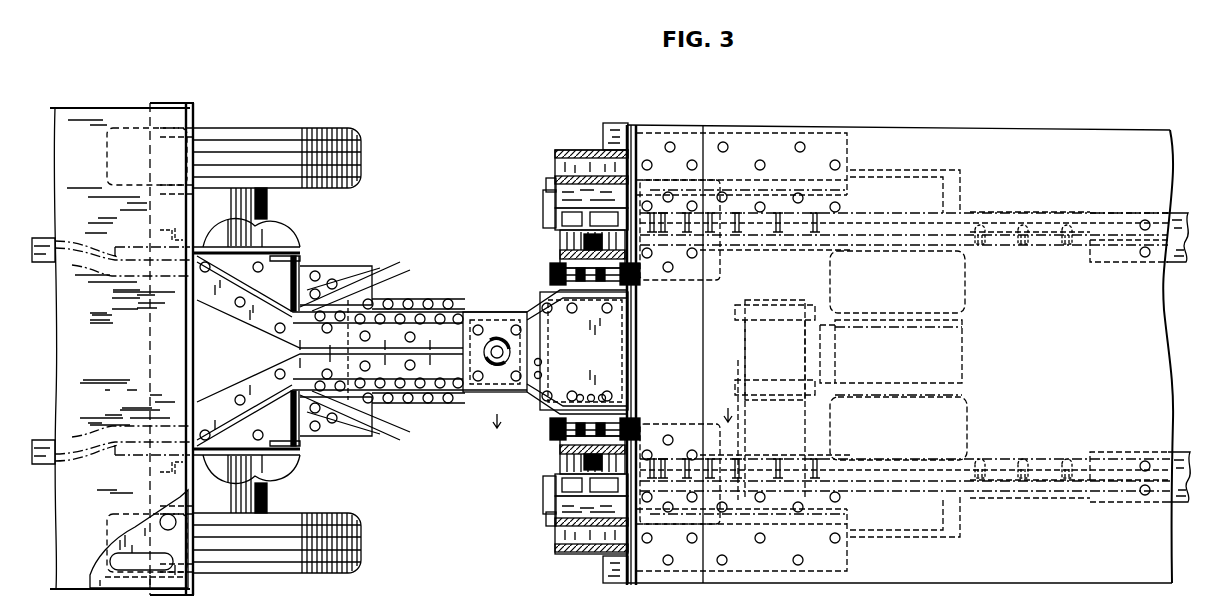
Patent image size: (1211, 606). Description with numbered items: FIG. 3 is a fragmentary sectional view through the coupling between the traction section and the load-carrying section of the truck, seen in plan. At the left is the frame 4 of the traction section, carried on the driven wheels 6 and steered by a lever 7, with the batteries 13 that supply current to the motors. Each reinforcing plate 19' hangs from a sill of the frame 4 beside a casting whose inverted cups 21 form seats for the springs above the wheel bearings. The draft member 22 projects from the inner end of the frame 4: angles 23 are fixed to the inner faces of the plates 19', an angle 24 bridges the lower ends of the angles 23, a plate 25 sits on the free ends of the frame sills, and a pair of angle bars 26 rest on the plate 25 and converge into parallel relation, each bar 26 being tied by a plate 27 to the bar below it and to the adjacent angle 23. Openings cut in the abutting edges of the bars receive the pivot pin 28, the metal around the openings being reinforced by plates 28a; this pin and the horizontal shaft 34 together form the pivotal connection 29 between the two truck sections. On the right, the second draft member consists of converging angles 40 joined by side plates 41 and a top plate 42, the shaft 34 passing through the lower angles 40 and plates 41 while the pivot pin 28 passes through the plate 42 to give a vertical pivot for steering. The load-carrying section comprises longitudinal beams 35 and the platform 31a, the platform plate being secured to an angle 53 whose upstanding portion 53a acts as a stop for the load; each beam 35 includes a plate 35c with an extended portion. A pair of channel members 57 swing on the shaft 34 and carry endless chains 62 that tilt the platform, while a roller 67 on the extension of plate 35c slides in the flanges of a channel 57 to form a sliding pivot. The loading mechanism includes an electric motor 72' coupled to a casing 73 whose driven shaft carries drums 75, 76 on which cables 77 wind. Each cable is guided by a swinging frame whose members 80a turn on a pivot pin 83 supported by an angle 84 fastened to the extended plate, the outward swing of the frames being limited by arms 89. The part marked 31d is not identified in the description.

The frame 4 is at (46, 262).
The wheels 6 is at (357, 183).
The steering lever 7 is at (615, 424).
The batteries 13 is at (125, 525).
The reinforcing plate 19' is at (198, 357).
The inverted cups 21 is at (267, 210).
The draft member 22 is at (380, 295).
The angles 23 is at (300, 260).
The angle 24 is at (348, 296).
The plate 25 is at (188, 352).
The angle bars 26 is at (270, 345).
The plate 27 is at (398, 290).
The pivot pin 28 is at (463, 358).
The reinforcing plates 28a is at (494, 340).
The pivotal connection 29 is at (520, 340).
The platform 31a is at (900, 354).
The underframe plate 31d is at (790, 583).
The horizontal shaft 34 is at (550, 356).
The longitudinal beams 35 is at (1165, 264).
The plate 35c is at (555, 219).
The converging angles 40 is at (549, 370).
The side plates 41 is at (548, 292).
The top plate 42 is at (637, 357).
The angle 53 is at (692, 318).
The upstanding portion 53a is at (628, 345).
The channel members 57 is at (560, 238).
The endless chains 62 is at (640, 290).
The roller 67 is at (584, 244).
The electric motor 72' is at (837, 355).
The casing 73 is at (745, 352).
The drum 75 is at (914, 172).
The drum 76 is at (934, 540).
The steel cables 77 is at (798, 182).
The frame members 80a is at (570, 152).
The pivot pin 83 is at (543, 205).
The angle 84 is at (546, 183).
The arms 89 is at (614, 130).